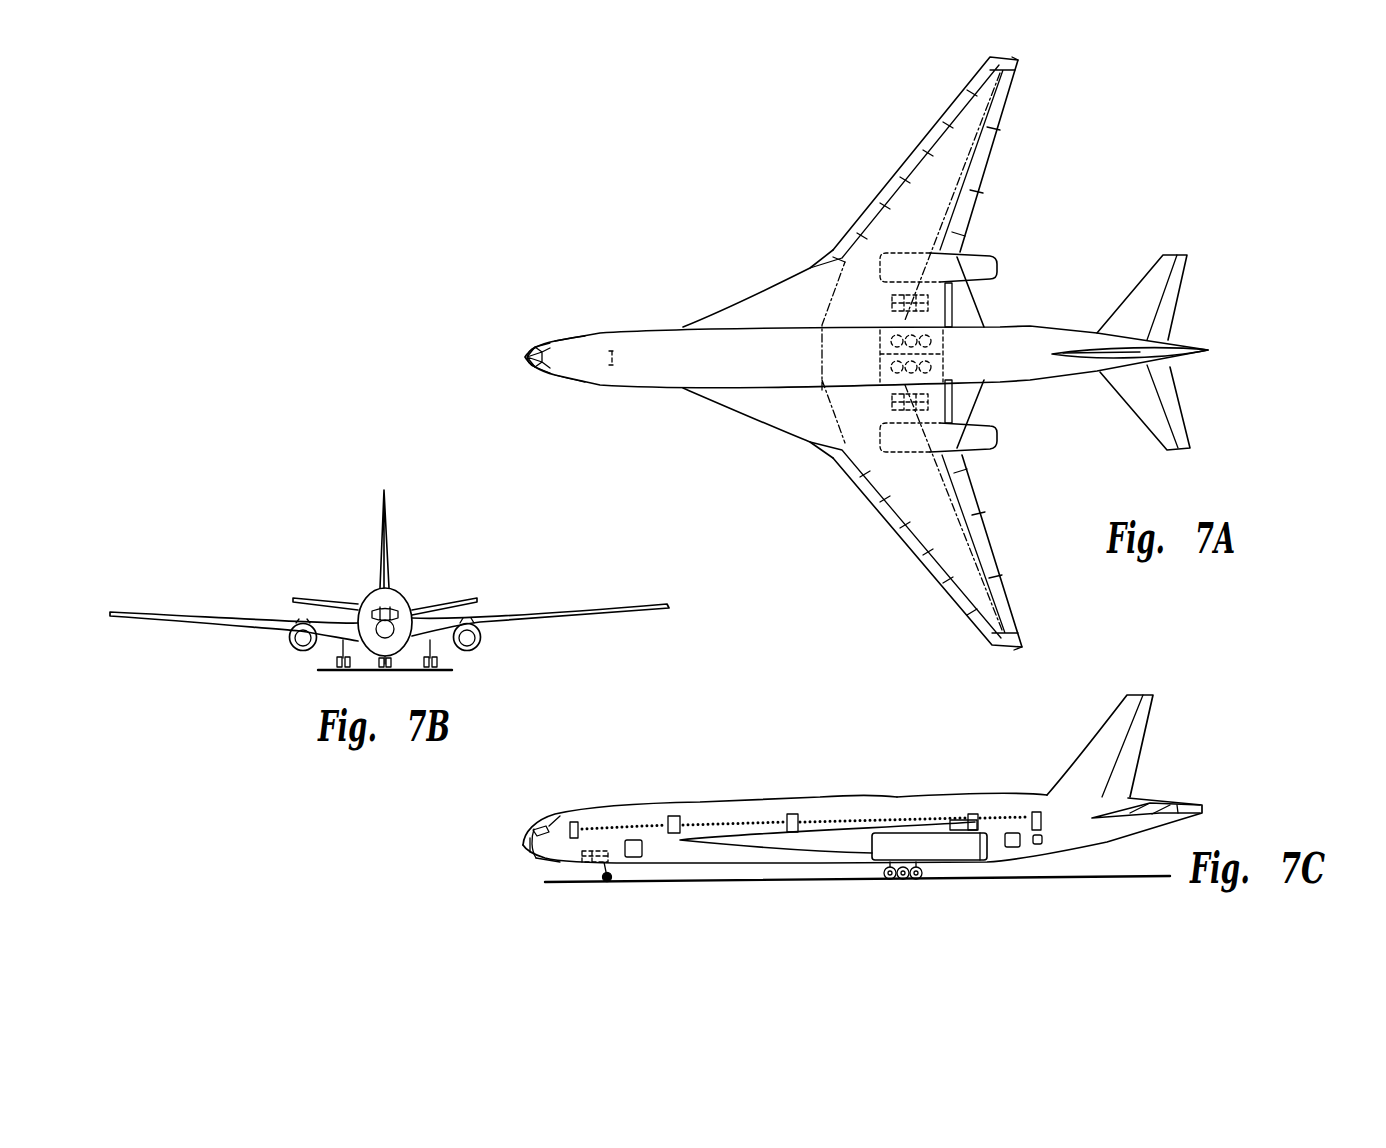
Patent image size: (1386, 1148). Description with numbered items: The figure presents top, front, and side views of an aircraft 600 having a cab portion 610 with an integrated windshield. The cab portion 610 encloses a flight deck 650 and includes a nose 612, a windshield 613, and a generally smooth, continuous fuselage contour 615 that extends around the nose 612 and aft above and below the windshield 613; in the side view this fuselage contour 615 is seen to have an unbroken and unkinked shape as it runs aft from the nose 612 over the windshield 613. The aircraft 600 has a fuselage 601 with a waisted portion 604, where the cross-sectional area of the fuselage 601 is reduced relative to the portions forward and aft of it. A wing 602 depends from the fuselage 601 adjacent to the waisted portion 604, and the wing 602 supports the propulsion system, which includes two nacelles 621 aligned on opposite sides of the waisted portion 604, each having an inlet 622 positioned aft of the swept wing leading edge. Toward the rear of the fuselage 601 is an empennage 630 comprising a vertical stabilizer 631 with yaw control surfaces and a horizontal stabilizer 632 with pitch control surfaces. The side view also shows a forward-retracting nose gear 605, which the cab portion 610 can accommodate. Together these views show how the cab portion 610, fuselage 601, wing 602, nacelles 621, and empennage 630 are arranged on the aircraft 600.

In FIG. 7A, the aircraft 600 is at (641, 242).
In FIG. 7B, the aircraft 600 is at (468, 532).
In FIG. 7C, the aircraft 600 is at (832, 757).
In FIG. 7A, the fuselage 601 is at (680, 328).
In FIG. 7B, the fuselage 601 is at (370, 590).
In FIG. 7C, the fuselage 601 is at (862, 839).
In FIG. 7A, the wing 602 is at (872, 505).
In FIG. 7B, the wing 602 is at (598, 606).
In FIG. 7A, the waisted portion 604 is at (862, 310).
In FIG. 7C, the waisted portion 604 is at (898, 797).
In FIG. 7C, the nose gear 605 is at (590, 865).
In FIG. 7A, the cab portion 610 is at (560, 332).
In FIG. 7C, the cab portion 610 is at (607, 804).
In FIG. 7A, the nose 612 is at (528, 362).
In FIG. 7C, the nose 612 is at (523, 845).
In FIG. 7A, the windshield 613 is at (538, 348).
In FIG. 7C, the windshield 613 is at (530, 831).
In FIG. 7C, the fuselage contour 615 is at (546, 822).
In FIG. 7A, the nacelles 621 is at (980, 253).
In FIG. 7B, the nacelles 621 is at (292, 640).
In FIG. 7C, the nacelles 621 is at (929, 846).
In FIG. 7B, the inlet 622 is at (300, 651).
In FIG. 7A, the empennage 630 is at (1093, 278).
In FIG. 7A, the vertical stabilizer 631 is at (1078, 360).
In FIG. 7B, the vertical stabilizer 631 is at (382, 524).
In FIG. 7C, the vertical stabilizer 631 is at (1153, 712).
In FIG. 7A, the horizontal stabilizer 632 is at (1166, 449).
In FIG. 7B, the horizontal stabilizer 632 is at (452, 604).
In FIG. 7C, the horizontal stabilizer 632 is at (1152, 805).
In FIG. 7C, the flight deck 650 is at (533, 857).